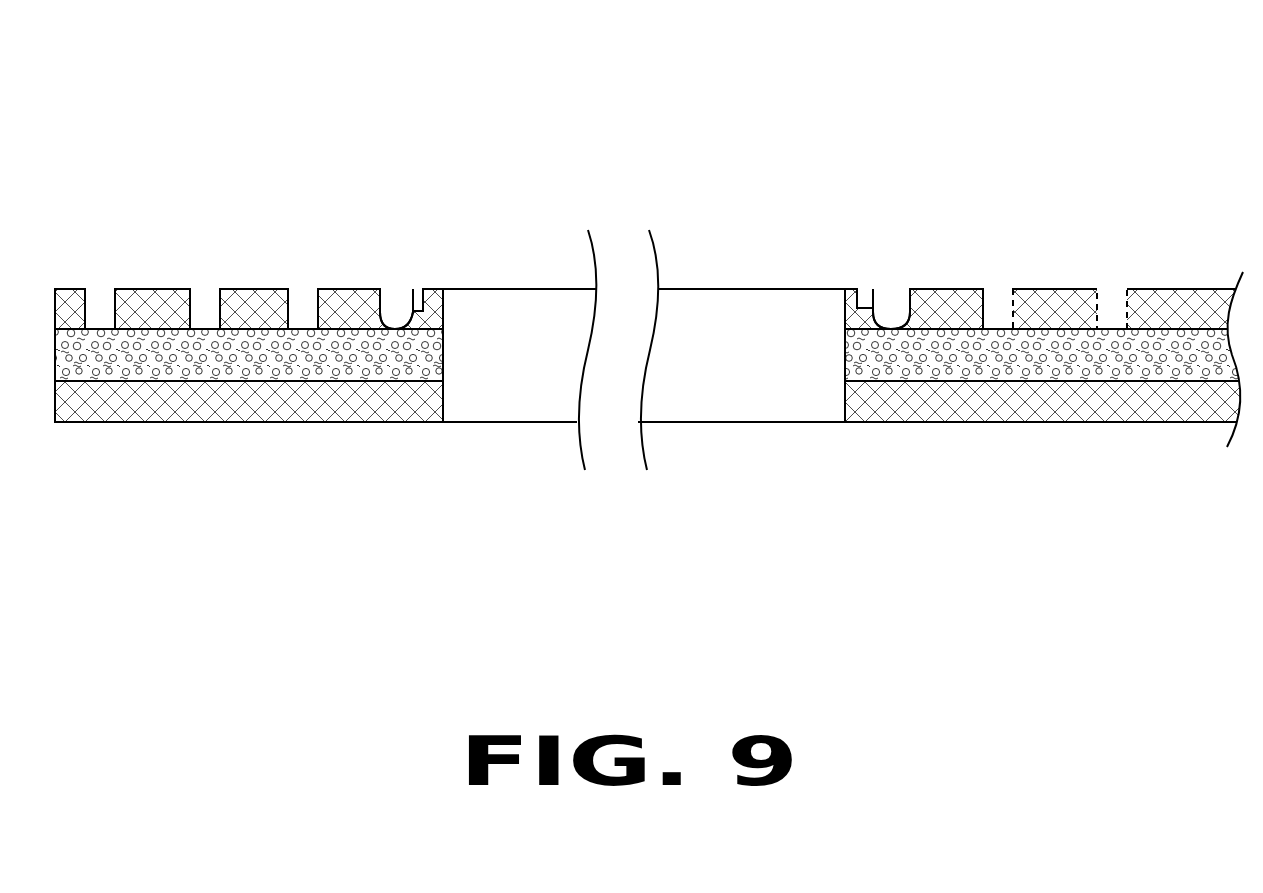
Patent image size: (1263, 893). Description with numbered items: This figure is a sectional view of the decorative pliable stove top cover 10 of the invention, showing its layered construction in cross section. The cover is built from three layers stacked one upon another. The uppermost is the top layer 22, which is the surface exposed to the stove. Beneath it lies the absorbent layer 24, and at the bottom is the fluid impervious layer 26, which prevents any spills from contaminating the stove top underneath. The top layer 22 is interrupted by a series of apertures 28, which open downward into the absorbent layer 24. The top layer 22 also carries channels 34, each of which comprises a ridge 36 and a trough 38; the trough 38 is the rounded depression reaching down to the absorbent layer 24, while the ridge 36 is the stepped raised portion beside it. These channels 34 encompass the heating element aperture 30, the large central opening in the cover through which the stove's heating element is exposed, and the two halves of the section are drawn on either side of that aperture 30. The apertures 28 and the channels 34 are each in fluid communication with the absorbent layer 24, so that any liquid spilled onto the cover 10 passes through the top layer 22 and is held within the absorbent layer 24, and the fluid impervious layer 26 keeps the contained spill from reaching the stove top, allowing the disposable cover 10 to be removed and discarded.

The stove top cover 10 is at (927, 121).
The top layer 22 is at (327, 300).
The absorbent layer 24 is at (1007, 358).
The fluid impervious layer 26 is at (175, 400).
The apertures 28 is at (102, 300).
The heating element aperture 30 is at (690, 323).
The channels 34 is at (393, 300).
The ridge 36 is at (422, 297).
The trough 38 is at (402, 298).